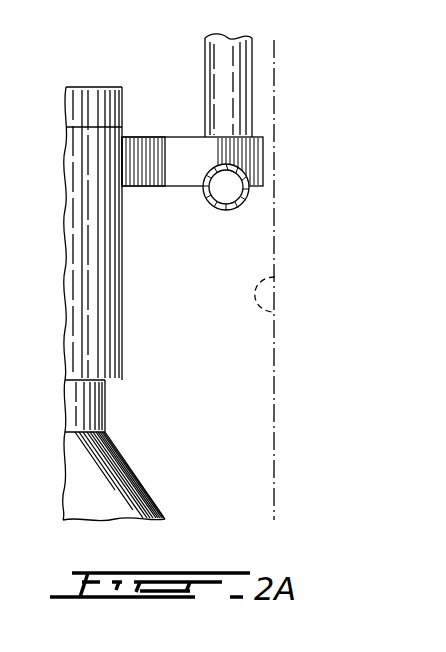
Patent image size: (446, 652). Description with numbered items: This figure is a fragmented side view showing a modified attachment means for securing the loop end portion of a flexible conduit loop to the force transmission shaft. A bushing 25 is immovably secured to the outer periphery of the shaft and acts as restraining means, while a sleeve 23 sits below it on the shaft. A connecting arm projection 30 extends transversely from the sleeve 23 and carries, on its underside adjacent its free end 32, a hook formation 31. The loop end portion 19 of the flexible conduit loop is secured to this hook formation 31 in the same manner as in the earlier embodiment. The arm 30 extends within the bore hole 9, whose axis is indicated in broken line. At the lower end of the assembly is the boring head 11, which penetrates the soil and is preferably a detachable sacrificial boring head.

The bore hole 9 is at (275, 277).
The boring head 11 is at (136, 498).
The loop end portion 19 is at (228, 68).
The sleeve 23 is at (90, 342).
The bushing 25 is at (94, 105).
The connecting arm projection 30 is at (153, 165).
The hook formation 31 is at (245, 172).
The free end 32 is at (263, 145).